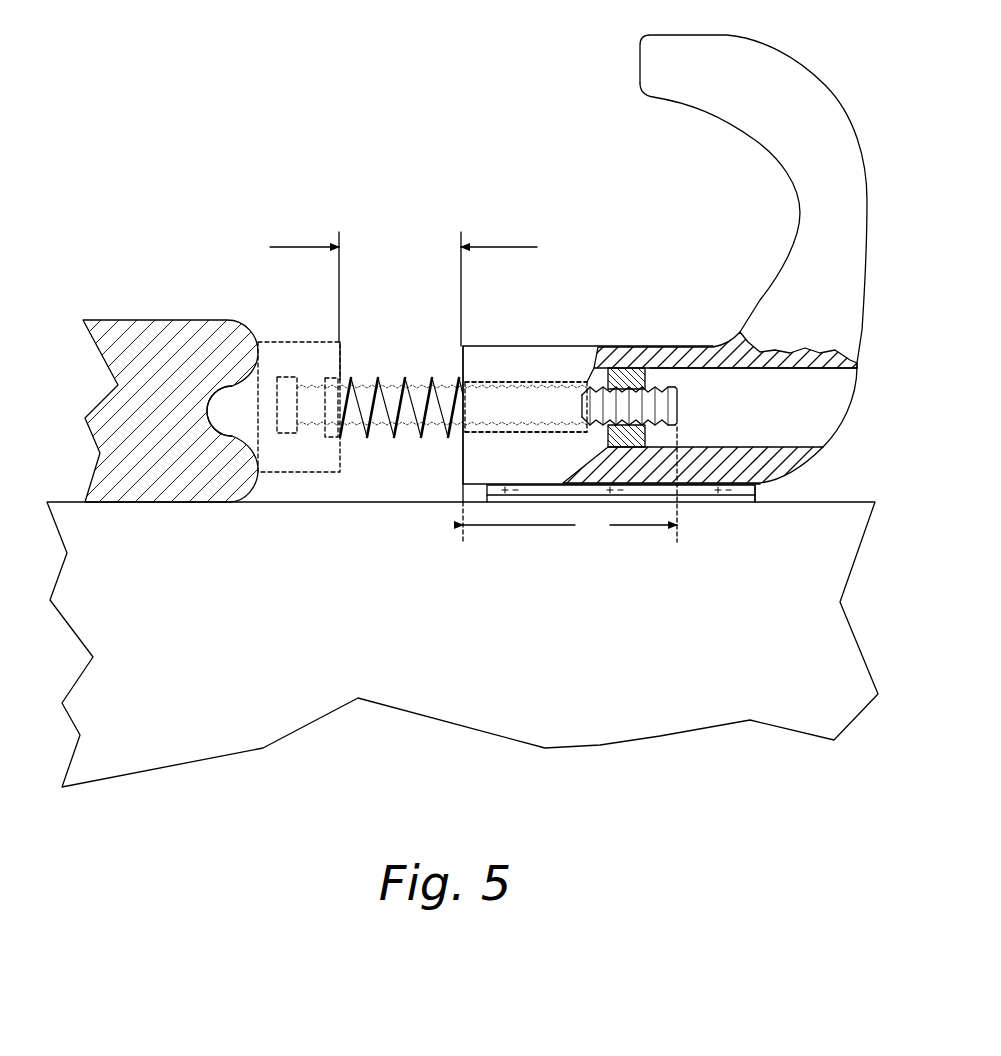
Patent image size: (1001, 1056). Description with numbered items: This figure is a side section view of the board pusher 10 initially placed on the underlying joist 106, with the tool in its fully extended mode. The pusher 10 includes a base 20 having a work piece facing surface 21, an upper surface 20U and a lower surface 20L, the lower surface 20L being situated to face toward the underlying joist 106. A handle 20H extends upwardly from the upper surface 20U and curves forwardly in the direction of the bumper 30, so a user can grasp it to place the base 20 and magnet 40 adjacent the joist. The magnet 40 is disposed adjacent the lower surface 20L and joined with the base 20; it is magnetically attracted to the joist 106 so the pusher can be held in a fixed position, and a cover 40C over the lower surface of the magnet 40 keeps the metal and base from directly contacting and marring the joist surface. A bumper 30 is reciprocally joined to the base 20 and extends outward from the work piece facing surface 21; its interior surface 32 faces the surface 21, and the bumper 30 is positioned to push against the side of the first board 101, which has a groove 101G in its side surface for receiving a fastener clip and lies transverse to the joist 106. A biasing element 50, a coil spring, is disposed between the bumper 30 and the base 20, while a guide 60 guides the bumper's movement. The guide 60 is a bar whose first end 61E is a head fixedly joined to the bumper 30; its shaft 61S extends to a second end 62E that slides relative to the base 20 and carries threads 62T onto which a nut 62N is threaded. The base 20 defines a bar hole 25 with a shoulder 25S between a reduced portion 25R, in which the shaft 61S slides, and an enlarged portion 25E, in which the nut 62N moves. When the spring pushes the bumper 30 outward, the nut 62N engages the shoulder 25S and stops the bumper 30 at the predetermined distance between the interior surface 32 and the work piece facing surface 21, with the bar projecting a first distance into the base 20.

The board pusher 10 is at (508, 155).
The base 20 is at (530, 346).
The handle 20H is at (790, 103).
The upper surface 20U is at (707, 346).
The lower surface 20L is at (758, 486).
The work piece facing surface 21 is at (460, 462).
The bar hole 25 is at (540, 385).
The shoulder 25S is at (597, 383).
The reduced portion 25R is at (527, 432).
The enlarged portion 25E is at (779, 394).
The bumper 30 is at (298, 478).
The interior surface 32 is at (342, 360).
The magnet 40 is at (756, 492).
The cover 40C is at (750, 502).
The biasing element 50 is at (397, 433).
The guide 60 is at (422, 358).
The first end 61E is at (288, 427).
The shaft 61S is at (502, 400).
The nut 62N is at (652, 368).
The second end 62E is at (676, 405).
The threads 62T is at (673, 418).
The first board 101 is at (112, 473).
The groove 101G is at (227, 436).
The underlying joist 106 is at (456, 647).